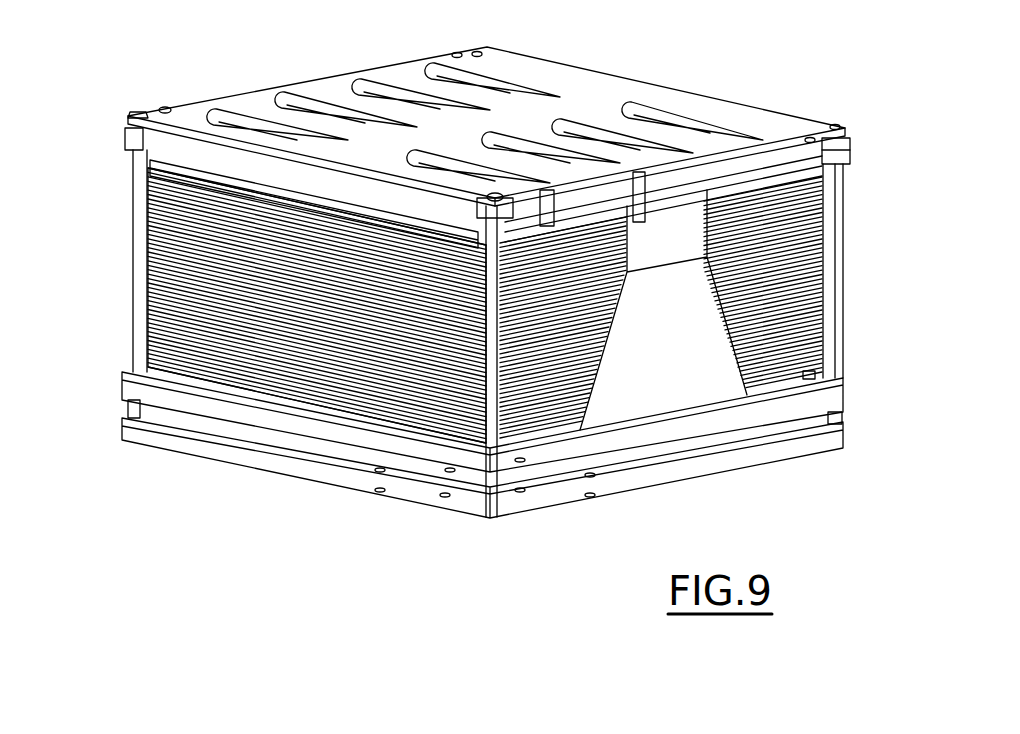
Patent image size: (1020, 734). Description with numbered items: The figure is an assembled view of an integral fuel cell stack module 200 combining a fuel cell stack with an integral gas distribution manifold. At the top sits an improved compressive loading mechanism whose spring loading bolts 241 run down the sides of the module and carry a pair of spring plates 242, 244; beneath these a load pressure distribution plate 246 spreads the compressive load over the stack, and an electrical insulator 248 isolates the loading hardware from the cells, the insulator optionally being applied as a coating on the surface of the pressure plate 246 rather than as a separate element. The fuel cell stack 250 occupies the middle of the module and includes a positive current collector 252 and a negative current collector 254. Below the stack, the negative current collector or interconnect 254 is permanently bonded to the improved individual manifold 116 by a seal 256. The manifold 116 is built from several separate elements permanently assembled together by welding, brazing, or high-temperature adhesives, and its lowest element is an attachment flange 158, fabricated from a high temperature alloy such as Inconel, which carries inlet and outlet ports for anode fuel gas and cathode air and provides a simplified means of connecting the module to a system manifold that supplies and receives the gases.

The integral fuel cell stack module 200 is at (258, 61).
The spring plate 242 is at (680, 108).
The spring plate 244 is at (240, 176).
The load pressure distribution plate 246 is at (175, 198).
The electrical insulator 248 is at (162, 220).
The fuel cell stack 250 is at (153, 268).
The positive current collector 252 is at (843, 171).
The spring loading bolts 241 is at (832, 272).
The negative current collector 254 is at (808, 378).
The seal 256 is at (837, 393).
The manifold 116 is at (840, 430).
The attachment flange 158 is at (590, 498).